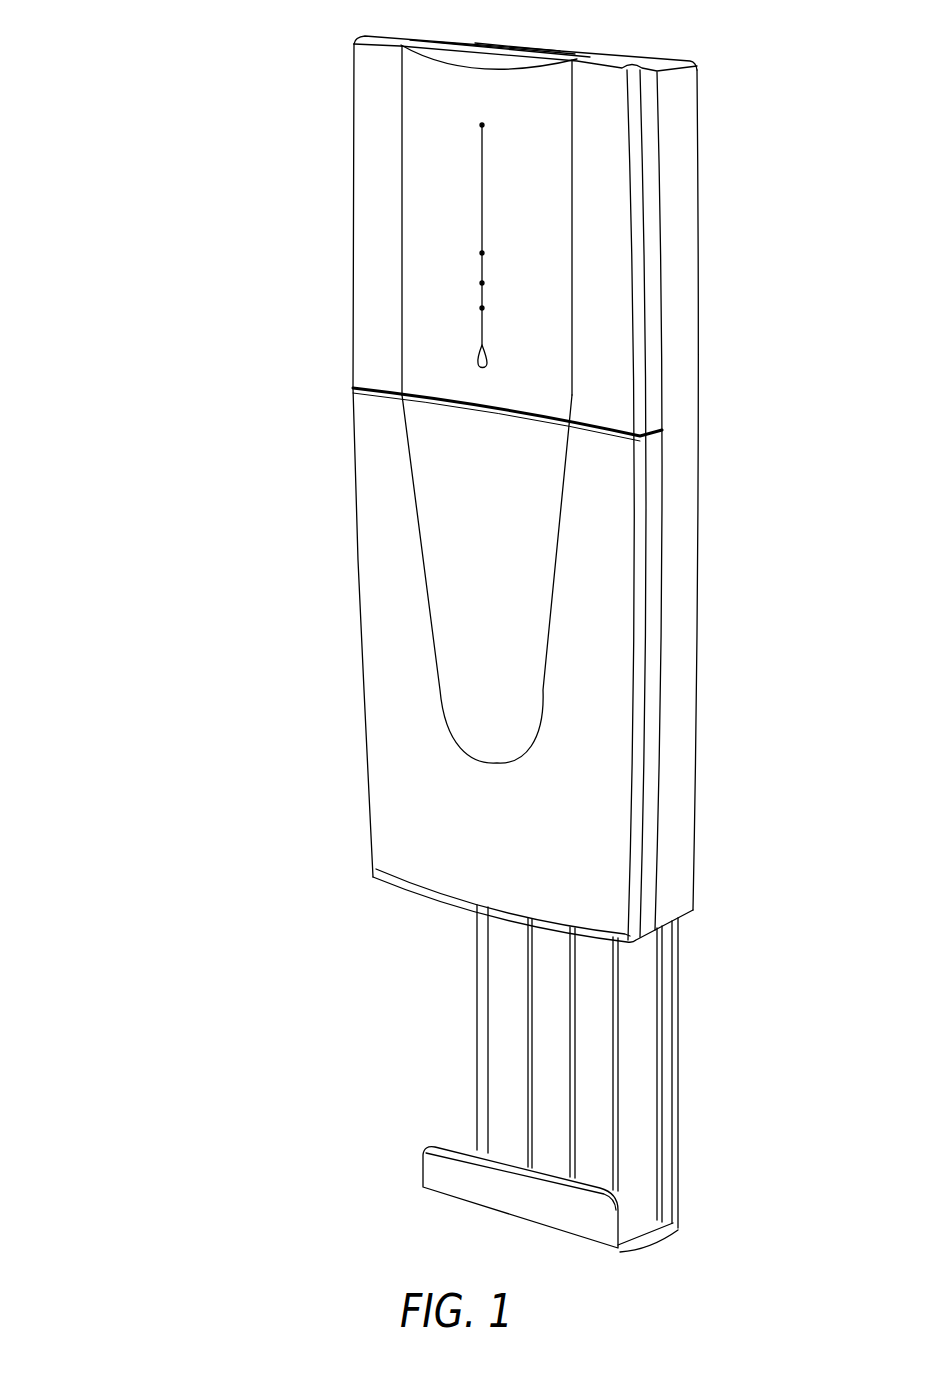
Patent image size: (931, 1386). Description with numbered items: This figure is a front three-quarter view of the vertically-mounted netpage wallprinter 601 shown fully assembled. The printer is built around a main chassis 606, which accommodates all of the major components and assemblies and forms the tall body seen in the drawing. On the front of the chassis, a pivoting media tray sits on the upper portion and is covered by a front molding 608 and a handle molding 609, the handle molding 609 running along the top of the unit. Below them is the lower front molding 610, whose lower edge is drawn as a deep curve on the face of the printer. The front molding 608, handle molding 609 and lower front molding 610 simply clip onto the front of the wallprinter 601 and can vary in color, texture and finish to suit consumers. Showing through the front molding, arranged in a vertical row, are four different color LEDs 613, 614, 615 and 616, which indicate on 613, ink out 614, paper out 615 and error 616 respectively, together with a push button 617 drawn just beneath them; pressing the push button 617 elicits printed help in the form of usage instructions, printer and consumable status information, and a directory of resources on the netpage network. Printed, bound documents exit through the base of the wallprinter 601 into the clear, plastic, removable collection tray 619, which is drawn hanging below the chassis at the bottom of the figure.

The netpage wallprinter 601 is at (252, 96).
The main chassis 606 is at (680, 675).
The front molding 608 is at (368, 200).
The handle molding 609 is at (507, 68).
The lower front molding 610 is at (377, 553).
The LED 613 is at (482, 125).
The LED 614 is at (482, 253).
The LED 615 is at (482, 283).
The LED 616 is at (482, 308).
The push button 617 is at (486, 362).
The collection tray 619 is at (640, 1017).